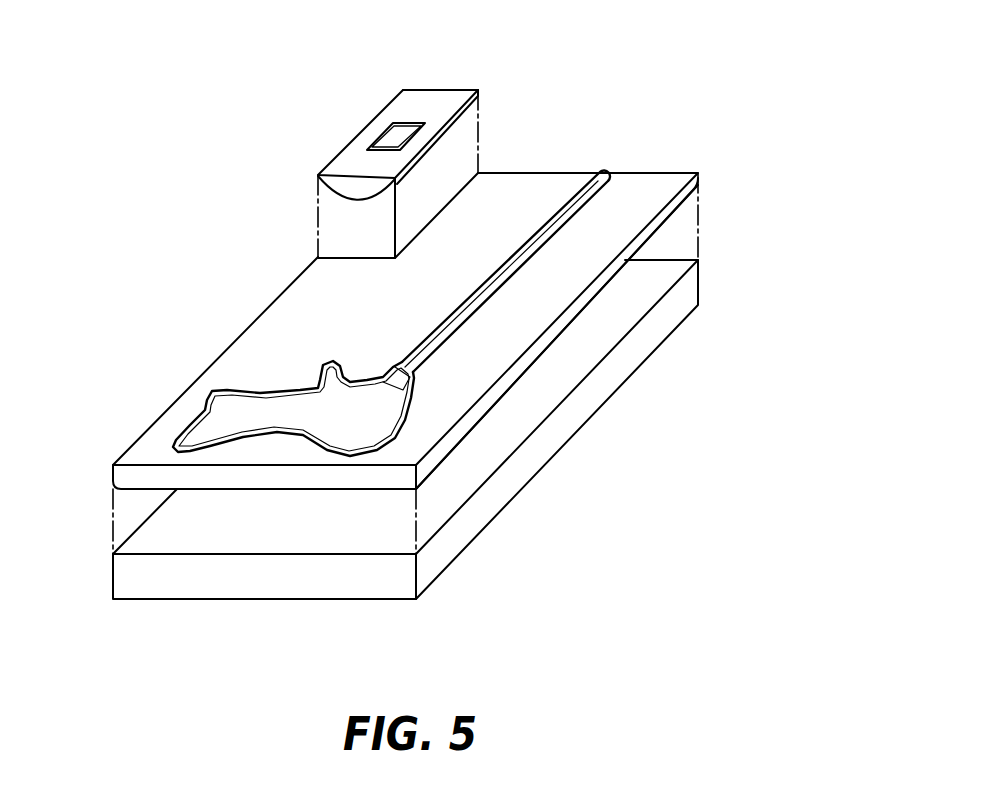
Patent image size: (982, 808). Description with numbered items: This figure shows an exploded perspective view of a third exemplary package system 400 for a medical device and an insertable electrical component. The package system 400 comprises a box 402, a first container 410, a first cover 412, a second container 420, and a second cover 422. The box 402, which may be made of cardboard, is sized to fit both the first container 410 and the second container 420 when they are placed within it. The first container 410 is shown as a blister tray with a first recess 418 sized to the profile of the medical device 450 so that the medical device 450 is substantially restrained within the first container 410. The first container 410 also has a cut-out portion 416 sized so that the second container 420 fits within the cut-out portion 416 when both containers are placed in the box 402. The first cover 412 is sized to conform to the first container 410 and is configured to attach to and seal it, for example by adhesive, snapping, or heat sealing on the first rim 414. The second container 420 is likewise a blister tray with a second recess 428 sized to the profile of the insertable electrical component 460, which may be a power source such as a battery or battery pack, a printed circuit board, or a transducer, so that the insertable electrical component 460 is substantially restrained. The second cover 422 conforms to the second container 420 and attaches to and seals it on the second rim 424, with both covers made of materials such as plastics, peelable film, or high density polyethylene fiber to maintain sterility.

The package system 400 is at (437, 310).
The box 402 is at (577, 413).
The first container 410 is at (437, 296).
The first cover 412 is at (668, 183).
The first rim 414 is at (653, 225).
The cut-out portion 416 is at (397, 140).
The first recess 418 is at (606, 176).
The second container 420 is at (470, 107).
The second cover 422 is at (450, 100).
The second rim 424 is at (450, 121).
The second recess 428 is at (402, 124).
The medical device 450 is at (200, 432).
The insertable electrical component 460 is at (335, 126).